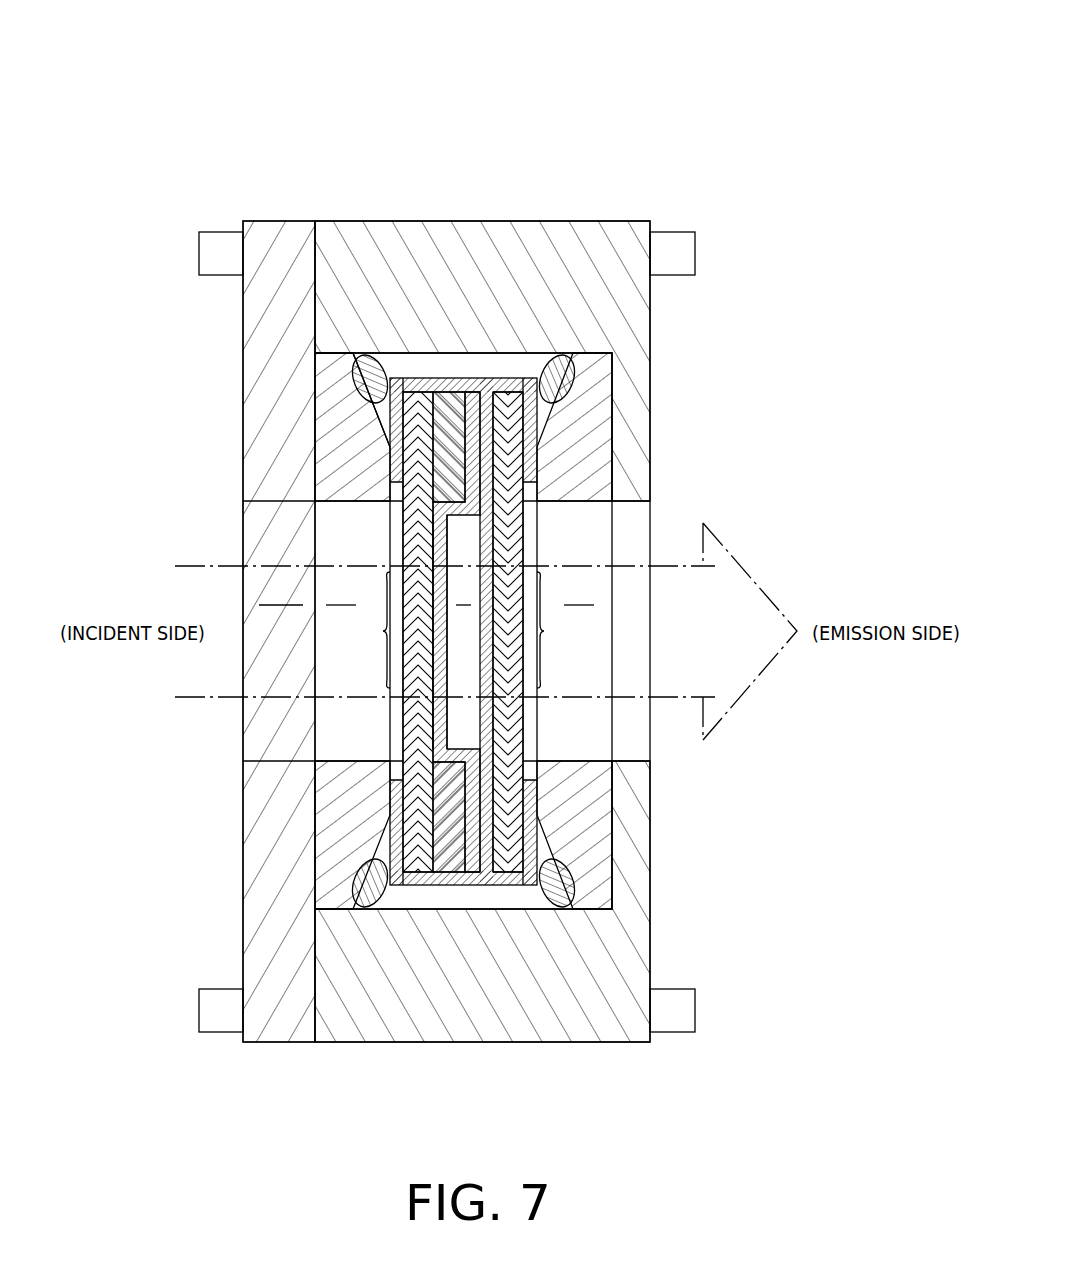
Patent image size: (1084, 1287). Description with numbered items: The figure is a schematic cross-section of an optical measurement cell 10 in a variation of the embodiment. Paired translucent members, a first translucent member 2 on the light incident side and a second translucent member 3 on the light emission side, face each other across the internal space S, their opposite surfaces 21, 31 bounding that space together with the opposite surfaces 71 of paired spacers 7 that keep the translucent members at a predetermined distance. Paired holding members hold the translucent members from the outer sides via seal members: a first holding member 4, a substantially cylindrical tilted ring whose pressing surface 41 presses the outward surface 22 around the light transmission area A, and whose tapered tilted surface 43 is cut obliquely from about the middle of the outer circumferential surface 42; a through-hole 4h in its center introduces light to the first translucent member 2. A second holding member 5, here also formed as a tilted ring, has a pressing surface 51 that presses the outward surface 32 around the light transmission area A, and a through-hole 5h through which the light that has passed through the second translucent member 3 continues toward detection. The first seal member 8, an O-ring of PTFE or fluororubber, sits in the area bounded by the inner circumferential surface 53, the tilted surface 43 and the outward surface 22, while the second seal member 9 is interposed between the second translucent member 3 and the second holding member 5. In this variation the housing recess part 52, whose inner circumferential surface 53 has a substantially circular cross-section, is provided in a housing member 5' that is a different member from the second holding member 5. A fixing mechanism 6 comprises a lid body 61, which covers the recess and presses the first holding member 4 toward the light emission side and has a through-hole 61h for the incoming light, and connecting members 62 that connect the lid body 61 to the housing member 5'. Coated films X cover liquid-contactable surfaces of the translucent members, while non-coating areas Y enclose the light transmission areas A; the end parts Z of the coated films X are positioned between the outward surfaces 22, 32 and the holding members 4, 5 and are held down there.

The optical measurement cell 10 is at (126, 88).
The fixing mechanism 6 is at (183, 193).
The lid body 61 is at (242, 362).
The through-hole 61h is at (282, 592).
The connecting members 62 is at (198, 253).
The housing member 5' is at (549, 631).
The first holding member 4 is at (301, 542).
The pressing surface 41 is at (417, 377).
The outer circumferential surface 42 is at (334, 357).
The tilted surface 43 is at (363, 357).
The through-hole 4h is at (341, 592).
The second holding member 5 is at (637, 503).
The pressing surface 51 is at (608, 382).
The through-hole 5h is at (579, 592).
The first seal member 8 is at (372, 868).
The second seal member 9 is at (567, 878).
The first translucent member 2 is at (459, 646).
The opposite surface 21 is at (447, 710).
The outward surface 22 is at (432, 705).
The second translucent member 3 is at (467, 755).
The opposite surface 31 is at (415, 532).
The outward surface 32 is at (510, 533).
The spacers 7 is at (430, 646).
The opposite surfaces 71 is at (440, 507).
The housing recess part 52 is at (437, 366).
The inner circumferential surface 53 is at (452, 885).
The internal space S is at (464, 592).
The coated films X is at (390, 440).
The non-coating areas Y is at (403, 712).
The end parts of the coated films Z is at (393, 490).
The light transmission area A is at (463, 630).